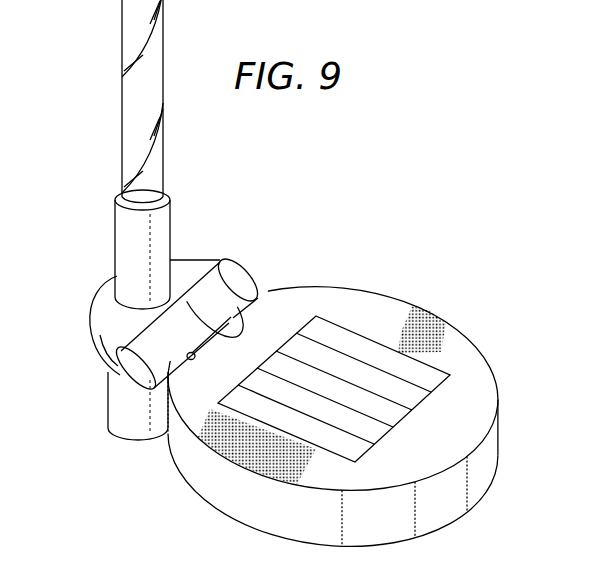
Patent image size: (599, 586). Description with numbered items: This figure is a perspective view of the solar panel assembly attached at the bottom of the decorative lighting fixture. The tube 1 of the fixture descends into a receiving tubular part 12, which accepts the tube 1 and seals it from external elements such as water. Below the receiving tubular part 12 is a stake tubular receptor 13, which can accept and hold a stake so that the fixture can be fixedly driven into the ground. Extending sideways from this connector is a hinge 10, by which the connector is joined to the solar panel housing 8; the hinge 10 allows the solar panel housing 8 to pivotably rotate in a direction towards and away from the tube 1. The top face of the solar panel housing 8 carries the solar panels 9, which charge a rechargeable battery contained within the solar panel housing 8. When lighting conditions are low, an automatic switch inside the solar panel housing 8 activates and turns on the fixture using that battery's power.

The tube 1 is at (138, 134).
The solar panel housing 8 is at (472, 352).
The solar panels 9 is at (335, 336).
The hinge 10 is at (238, 271).
The receiving tubular part 12 is at (157, 243).
The stake tubular receptor 13 is at (120, 403).